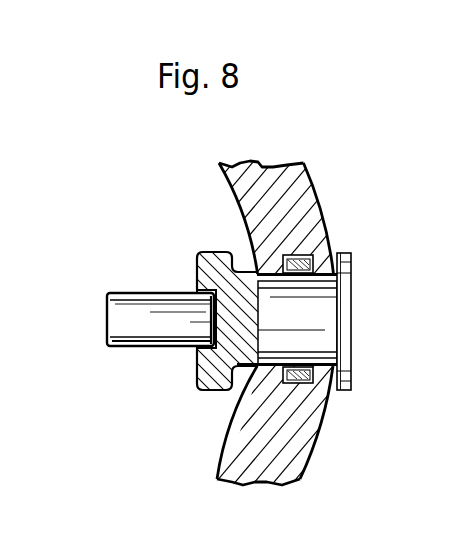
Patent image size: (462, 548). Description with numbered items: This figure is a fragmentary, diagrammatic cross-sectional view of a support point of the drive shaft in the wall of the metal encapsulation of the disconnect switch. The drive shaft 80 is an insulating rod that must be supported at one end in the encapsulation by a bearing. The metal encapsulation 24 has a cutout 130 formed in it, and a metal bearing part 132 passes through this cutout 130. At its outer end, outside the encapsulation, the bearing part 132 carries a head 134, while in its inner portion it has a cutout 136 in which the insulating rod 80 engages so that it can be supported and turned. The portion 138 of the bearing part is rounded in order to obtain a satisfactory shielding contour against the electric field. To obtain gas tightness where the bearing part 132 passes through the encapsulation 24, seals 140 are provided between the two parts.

The metal encapsulation 24 is at (257, 168).
The drive shaft 80 is at (132, 323).
The cutout 130 is at (323, 292).
The metal bearing part 132 is at (318, 338).
The head 134 is at (343, 277).
The cutout 136 is at (228, 381).
The rounded portion 138 is at (205, 258).
The seals 140 is at (298, 377).